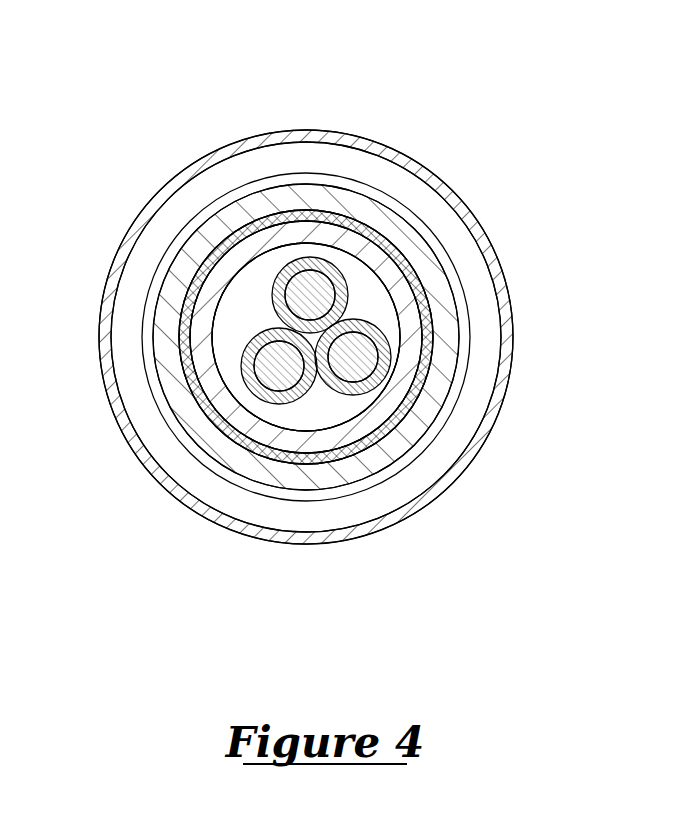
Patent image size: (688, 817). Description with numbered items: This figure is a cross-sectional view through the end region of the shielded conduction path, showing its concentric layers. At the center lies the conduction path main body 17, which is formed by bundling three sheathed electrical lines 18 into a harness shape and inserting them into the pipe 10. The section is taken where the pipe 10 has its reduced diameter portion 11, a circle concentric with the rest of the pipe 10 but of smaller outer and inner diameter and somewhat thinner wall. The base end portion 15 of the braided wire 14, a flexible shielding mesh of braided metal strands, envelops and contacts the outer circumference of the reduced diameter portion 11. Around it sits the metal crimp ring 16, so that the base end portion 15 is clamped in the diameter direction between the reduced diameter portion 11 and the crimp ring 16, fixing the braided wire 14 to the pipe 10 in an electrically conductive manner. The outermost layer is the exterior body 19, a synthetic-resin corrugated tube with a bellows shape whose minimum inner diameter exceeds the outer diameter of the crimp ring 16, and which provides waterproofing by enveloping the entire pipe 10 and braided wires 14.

The pipe 10 is at (186, 260).
The reduced diameter portion 11 is at (415, 303).
The braided wire 14 is at (252, 201).
The base end portion 15 is at (297, 212).
The crimp ring 16 is at (157, 302).
The conduction path main body 17 is at (335, 420).
The sheathed electrical line 18 is at (330, 277).
The exterior body 19 is at (370, 158).